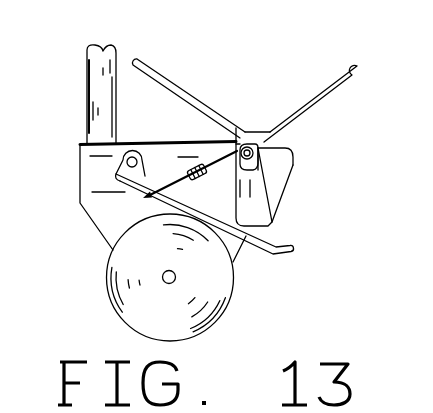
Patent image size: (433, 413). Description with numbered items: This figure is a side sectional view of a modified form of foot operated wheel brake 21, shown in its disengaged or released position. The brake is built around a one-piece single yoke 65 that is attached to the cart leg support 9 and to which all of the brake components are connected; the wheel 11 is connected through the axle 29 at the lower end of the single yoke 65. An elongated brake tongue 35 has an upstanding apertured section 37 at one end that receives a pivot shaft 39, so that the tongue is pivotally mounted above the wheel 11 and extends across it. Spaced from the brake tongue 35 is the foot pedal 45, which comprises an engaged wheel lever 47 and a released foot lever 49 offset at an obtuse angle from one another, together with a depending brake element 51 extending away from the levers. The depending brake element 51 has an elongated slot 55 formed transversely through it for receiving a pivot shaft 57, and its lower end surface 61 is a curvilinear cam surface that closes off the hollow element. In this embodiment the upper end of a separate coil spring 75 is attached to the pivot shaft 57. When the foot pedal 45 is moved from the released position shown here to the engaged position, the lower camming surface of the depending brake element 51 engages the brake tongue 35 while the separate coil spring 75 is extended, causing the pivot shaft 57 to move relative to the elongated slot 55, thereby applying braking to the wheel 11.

The leg support 9 is at (95, 90).
The wheel 11 is at (177, 318).
The foot operated wheel brake 21 is at (260, 96).
The axle 29 is at (176, 277).
The brake tongue 35 is at (272, 252).
The upstanding apertured section 37 is at (143, 173).
The pivot shaft 39 is at (132, 156).
The foot pedal 45 is at (285, 163).
The engaged wheel lever 47 is at (327, 91).
The released foot lever 49 is at (188, 93).
The depending brake element 51 is at (258, 205).
The elongated slot 55 is at (268, 141).
The pivot shaft 57 is at (286, 171).
The lower end surface 61 is at (272, 229).
The single yoke 65 is at (89, 232).
The separate coil spring 75 is at (213, 154).